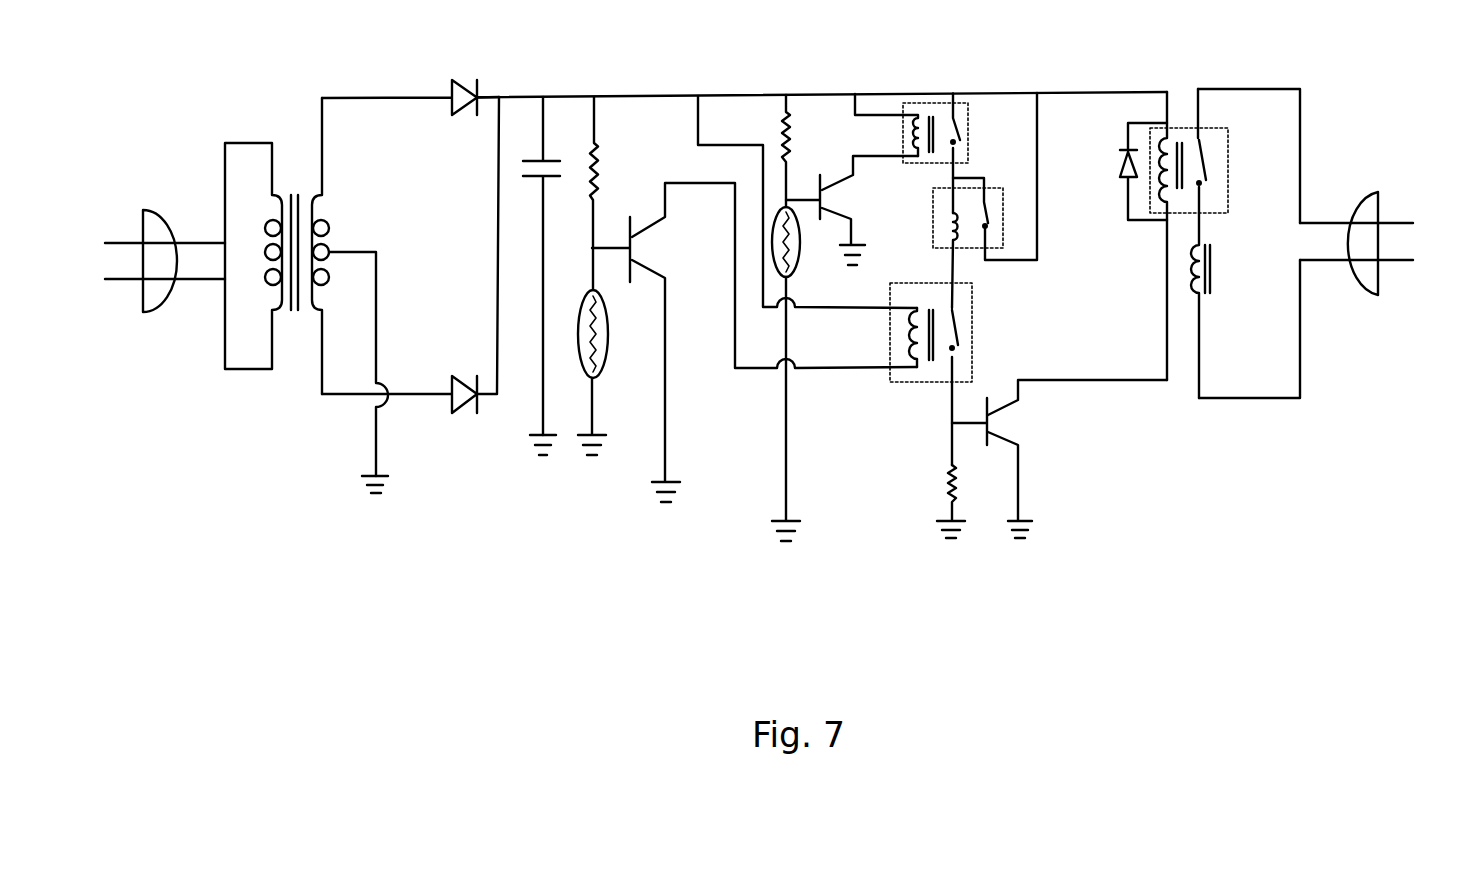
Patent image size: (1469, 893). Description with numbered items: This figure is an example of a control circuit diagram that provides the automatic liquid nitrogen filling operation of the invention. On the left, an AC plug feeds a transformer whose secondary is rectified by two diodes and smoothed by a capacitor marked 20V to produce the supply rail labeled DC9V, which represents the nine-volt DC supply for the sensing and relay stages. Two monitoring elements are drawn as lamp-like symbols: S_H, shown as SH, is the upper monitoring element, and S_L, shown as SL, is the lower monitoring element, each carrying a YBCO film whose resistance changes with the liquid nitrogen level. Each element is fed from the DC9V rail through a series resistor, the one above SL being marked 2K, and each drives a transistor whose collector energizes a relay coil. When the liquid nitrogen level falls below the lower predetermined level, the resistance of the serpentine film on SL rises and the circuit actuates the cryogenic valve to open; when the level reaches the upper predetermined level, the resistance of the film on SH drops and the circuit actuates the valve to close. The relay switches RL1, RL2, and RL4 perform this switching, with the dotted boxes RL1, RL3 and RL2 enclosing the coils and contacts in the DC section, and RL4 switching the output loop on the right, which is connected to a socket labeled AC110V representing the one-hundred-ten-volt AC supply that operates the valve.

The 9-V DC supply DC9V is at (822, 71).
The 20 V filter capacitor 20V is at (552, 276).
The upper monitoring element SH is at (614, 372).
The 2 kilo-ohm bias resistor 2K is at (808, 151).
The lower monitoring element SL is at (800, 374).
The relay switch RL1 is at (936, 154).
The relay switch RL2 is at (959, 374).
The relay RL3 is at (985, 200).
The relay switch RL4 is at (1203, 243).
The 110-V AC supply AC110V is at (1329, 243).